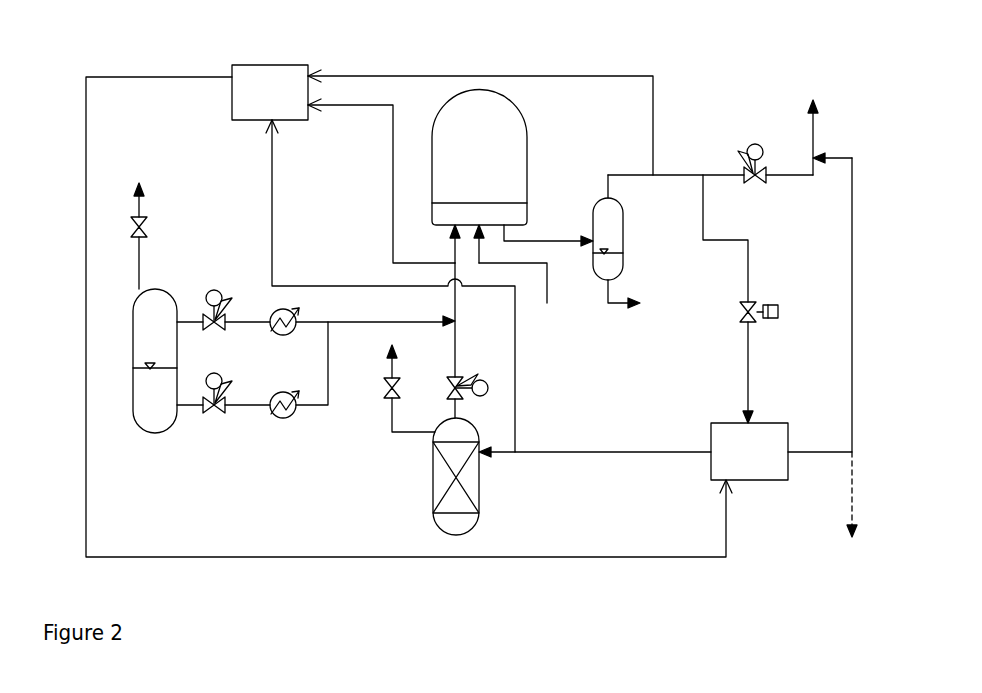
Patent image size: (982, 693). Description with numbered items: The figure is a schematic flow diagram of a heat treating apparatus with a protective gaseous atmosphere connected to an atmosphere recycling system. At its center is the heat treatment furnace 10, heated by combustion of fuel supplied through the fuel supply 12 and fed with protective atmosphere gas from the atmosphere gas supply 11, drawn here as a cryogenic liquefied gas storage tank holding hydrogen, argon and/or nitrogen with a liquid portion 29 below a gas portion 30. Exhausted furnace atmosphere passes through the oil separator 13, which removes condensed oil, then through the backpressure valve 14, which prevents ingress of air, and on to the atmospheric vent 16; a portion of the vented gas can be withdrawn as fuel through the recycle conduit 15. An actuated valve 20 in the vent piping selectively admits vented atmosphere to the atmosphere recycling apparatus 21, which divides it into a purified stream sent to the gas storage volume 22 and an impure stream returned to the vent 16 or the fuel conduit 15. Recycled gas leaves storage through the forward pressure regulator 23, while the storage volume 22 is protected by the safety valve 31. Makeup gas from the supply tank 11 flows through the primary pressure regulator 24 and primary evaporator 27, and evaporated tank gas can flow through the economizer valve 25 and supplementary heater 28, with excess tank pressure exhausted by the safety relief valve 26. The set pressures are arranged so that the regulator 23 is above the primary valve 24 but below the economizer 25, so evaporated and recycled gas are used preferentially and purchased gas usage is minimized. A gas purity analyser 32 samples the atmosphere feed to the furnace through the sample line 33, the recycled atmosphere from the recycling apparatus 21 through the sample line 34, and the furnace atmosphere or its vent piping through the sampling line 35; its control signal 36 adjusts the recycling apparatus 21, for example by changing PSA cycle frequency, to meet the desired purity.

The heat treatment furnace 10 is at (512, 177).
The atmosphere gas supply 11 is at (141, 361).
The fuel supply 12 is at (558, 324).
The oil separation drum 13 is at (621, 241).
The back pressure valve 14 is at (710, 178).
The recycle conduit 15 is at (852, 510).
The atmospheric vent 16 is at (812, 110).
The actuated valve 20 is at (744, 299).
The atmosphere recycling apparatus 21 is at (781, 319).
The gas storage volume 22 is at (443, 476).
The forward pressure regulator 23 is at (467, 340).
The primary pressure regulator 24 is at (223, 408).
The economizer valve 25 is at (223, 296).
The safety relief valve 26 is at (151, 236).
The primary evaporator 27 is at (299, 382).
The supplementary heater 28 is at (362, 333).
The liquid portion 29 is at (168, 394).
The gas portion 30 is at (168, 334).
The safety valve 31 is at (395, 388).
The gas purity analyser 32 is at (270, 92).
The sample line 33 is at (381, 181).
The sample line 34 is at (474, 288).
The sampling line 35 is at (480, 122).
The control signal 36 is at (409, 317).